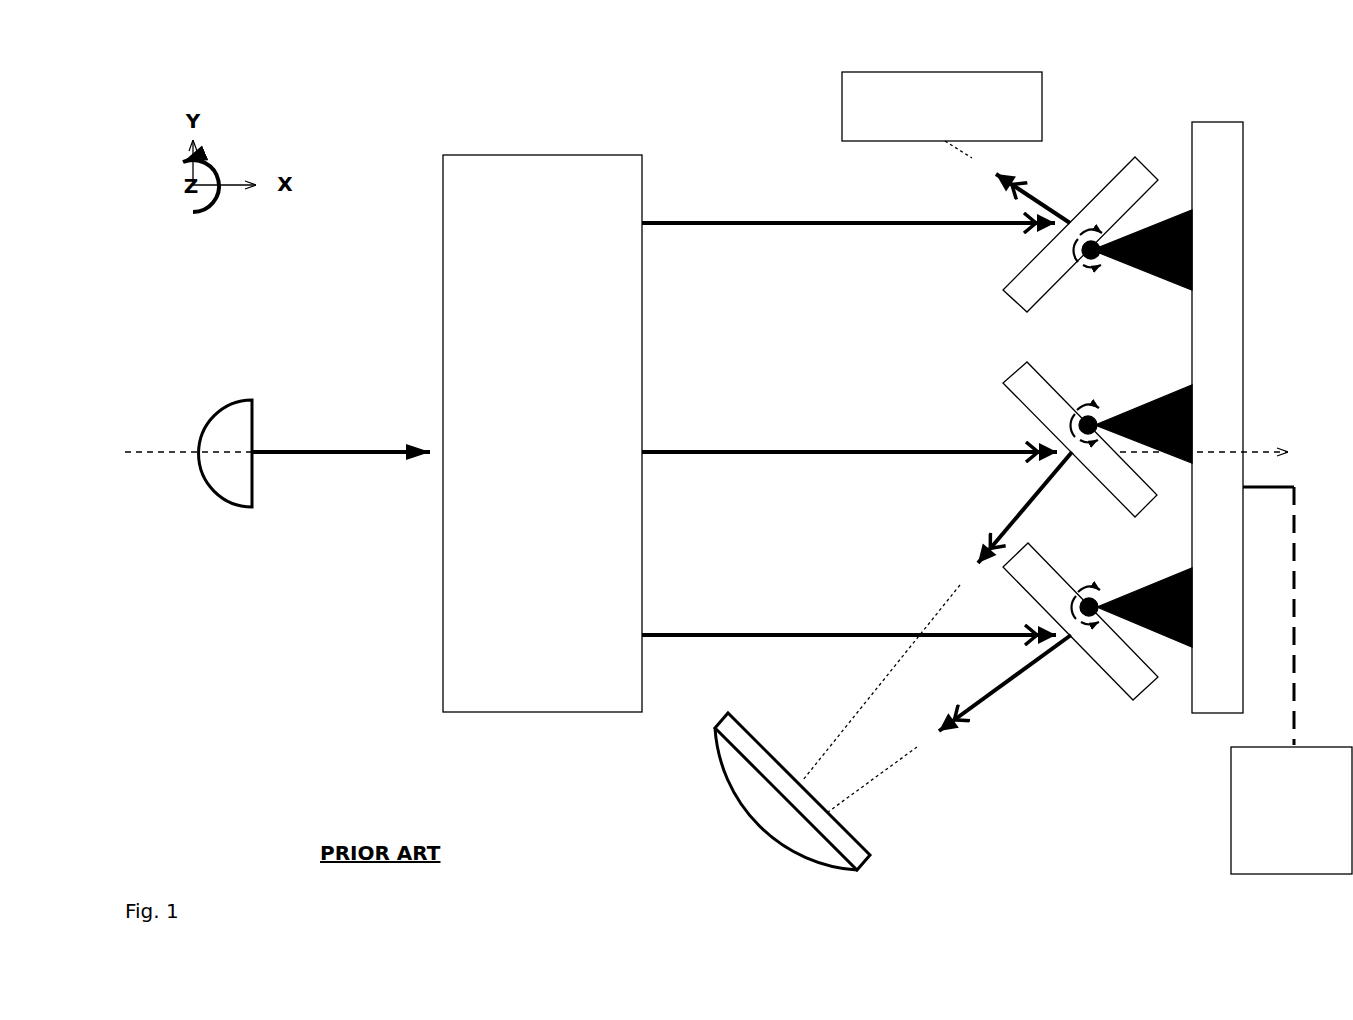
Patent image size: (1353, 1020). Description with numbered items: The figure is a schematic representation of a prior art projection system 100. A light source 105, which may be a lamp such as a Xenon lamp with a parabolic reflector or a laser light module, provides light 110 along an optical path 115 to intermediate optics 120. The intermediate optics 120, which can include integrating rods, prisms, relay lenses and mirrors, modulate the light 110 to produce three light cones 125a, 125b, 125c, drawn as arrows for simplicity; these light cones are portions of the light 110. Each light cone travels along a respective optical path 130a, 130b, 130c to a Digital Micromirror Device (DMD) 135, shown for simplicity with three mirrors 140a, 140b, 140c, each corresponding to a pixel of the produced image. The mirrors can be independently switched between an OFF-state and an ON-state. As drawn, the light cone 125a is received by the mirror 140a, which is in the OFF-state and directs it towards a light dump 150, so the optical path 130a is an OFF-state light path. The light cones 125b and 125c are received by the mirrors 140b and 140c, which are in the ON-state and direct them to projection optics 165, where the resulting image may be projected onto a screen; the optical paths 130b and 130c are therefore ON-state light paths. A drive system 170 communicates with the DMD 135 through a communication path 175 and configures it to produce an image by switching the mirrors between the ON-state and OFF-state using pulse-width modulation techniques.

The projection system 100 is at (388, 122).
The light source 105 is at (236, 505).
The light 110 is at (300, 455).
The optical path 115 is at (148, 450).
The intermediate optics 120 is at (542, 433).
The light cone 125a is at (690, 222).
The light cone 125b is at (685, 450).
The light cone 125c is at (690, 633).
The optical path 130a is at (963, 158).
The optical path 130b is at (852, 718).
The optical path 130c is at (890, 768).
The Digital Micromirror Device 135 is at (1204, 417).
The mirror 140a is at (1093, 197).
The mirror 140b is at (1028, 363).
The mirror 140c is at (1032, 545).
The light dump 150 is at (942, 106).
The projection optics 165 is at (750, 810).
The drive system 170 is at (1291, 810).
The communication path 175 is at (1296, 512).